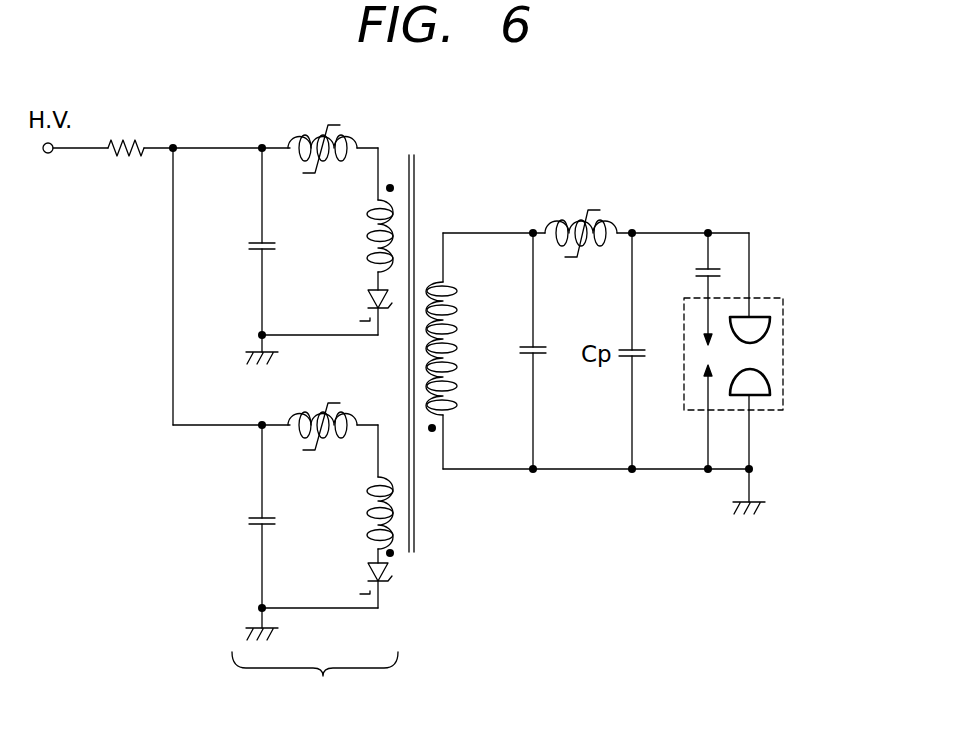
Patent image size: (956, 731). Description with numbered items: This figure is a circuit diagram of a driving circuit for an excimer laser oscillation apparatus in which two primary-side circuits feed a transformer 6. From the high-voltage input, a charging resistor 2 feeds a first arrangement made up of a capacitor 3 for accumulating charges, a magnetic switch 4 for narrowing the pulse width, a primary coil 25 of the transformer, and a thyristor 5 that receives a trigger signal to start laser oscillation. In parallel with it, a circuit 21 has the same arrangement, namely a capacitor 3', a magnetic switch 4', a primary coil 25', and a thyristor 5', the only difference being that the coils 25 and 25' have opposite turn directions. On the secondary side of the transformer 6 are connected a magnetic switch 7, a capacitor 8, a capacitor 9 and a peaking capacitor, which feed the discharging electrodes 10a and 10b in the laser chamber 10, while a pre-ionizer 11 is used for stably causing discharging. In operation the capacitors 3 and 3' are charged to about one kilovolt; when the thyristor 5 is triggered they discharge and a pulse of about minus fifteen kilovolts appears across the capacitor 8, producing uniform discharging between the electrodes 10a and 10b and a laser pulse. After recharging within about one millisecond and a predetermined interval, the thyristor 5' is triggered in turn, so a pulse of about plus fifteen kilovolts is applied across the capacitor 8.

The charging resistor 2 is at (126, 141).
The capacitor 3 is at (278, 230).
The magnetic switch 4 is at (322, 129).
The primary coil 25 is at (354, 236).
The thyristor 5 is at (358, 307).
The capacitor 3' is at (281, 505).
The magnetic switch 4' is at (322, 406).
The primary coil 25' is at (352, 513).
The thyristor 5' is at (356, 579).
The circuit 21 is at (315, 537).
The transformer 6 is at (412, 153).
The magnetic switch 7 is at (586, 209).
The capacitor 8 is at (540, 347).
The capacitor 9 is at (696, 270).
The pre-ionizer 11 is at (700, 351).
The laser chamber 10 is at (770, 367).
The discharging electrode 10a is at (771, 338).
The discharging electrode 10b is at (771, 385).